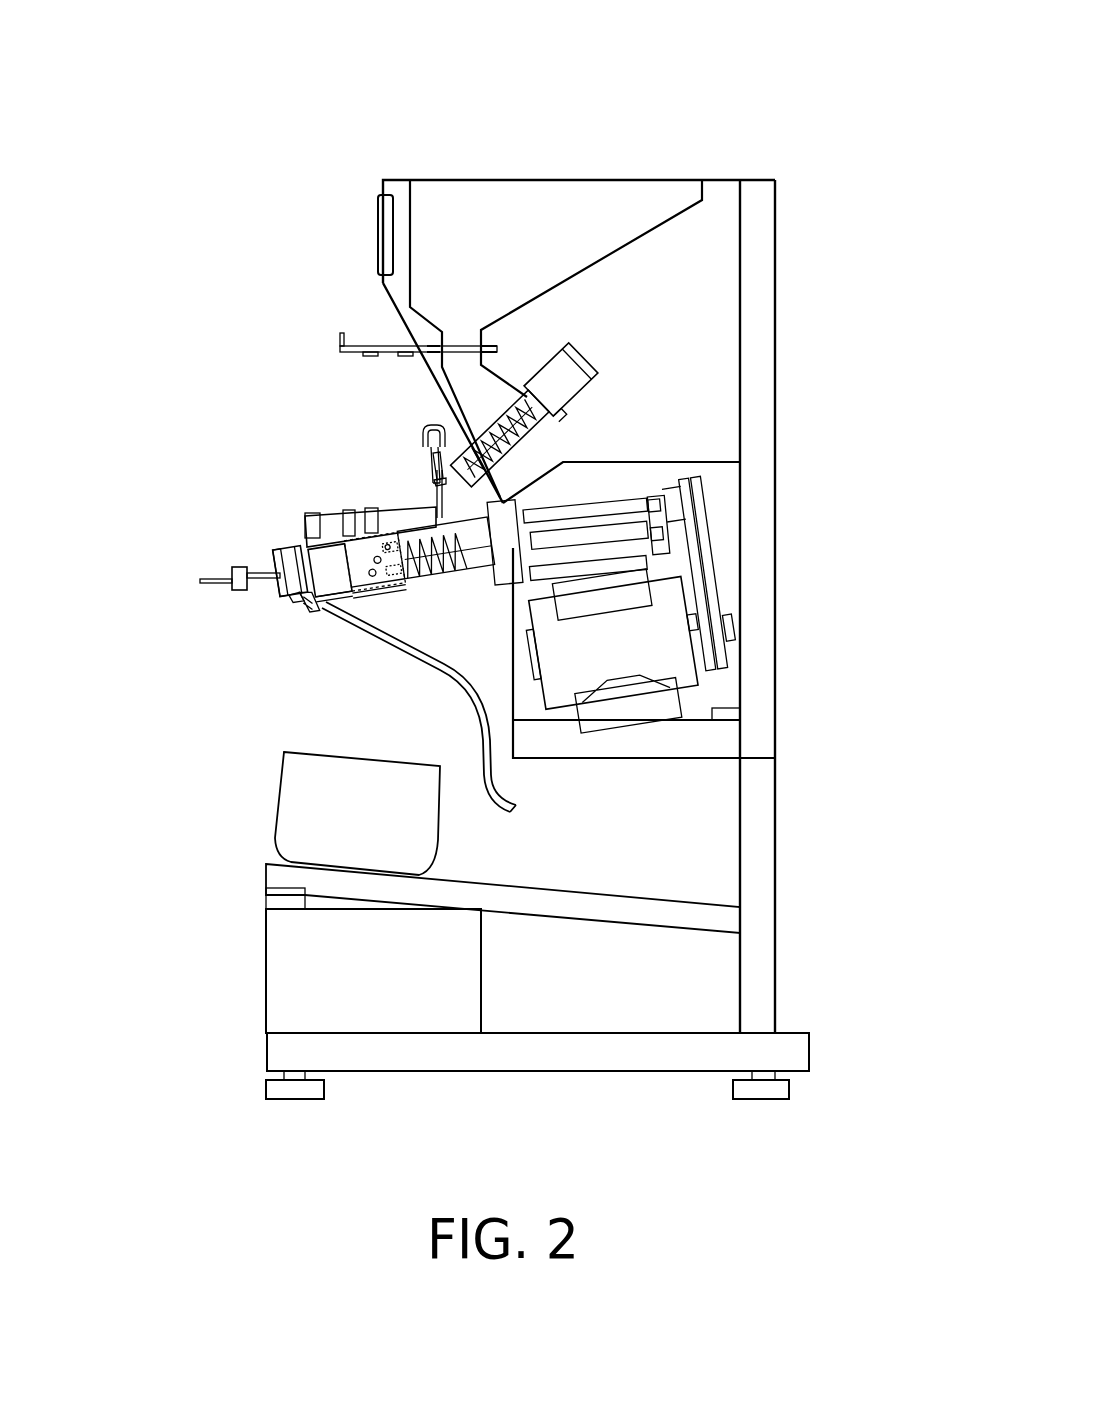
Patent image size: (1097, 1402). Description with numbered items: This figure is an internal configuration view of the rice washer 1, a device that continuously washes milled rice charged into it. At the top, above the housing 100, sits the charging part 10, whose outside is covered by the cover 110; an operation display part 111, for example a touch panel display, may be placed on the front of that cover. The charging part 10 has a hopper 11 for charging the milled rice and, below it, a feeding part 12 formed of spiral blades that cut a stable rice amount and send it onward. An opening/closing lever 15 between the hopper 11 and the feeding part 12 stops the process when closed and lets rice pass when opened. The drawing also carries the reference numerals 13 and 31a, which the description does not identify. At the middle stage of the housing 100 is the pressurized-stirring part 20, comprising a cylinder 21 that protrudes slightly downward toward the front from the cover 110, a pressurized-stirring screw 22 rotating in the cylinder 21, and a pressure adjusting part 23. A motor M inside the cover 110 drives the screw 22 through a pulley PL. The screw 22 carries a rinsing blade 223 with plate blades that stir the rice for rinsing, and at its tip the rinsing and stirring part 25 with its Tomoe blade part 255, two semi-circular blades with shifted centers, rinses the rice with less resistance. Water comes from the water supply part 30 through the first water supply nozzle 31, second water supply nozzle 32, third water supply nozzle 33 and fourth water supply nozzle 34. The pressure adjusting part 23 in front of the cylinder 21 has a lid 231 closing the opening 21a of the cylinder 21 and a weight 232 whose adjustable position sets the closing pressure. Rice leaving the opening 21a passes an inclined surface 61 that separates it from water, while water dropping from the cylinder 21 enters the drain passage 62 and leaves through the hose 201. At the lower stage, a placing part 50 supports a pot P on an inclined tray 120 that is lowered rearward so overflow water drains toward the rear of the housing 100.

The rice washer 1 is at (723, 100).
The charging part 10 is at (427, 180).
The hopper 11 is at (548, 200).
The operation display part 111 is at (383, 222).
The cover 110 is at (716, 288).
The opening/closing lever 15 is at (383, 345).
The support bracket 13 is at (463, 428).
The feeding part 12 is at (517, 440).
The water supply part 30 is at (203, 478).
The first water supply nozzle 31 is at (447, 452).
The heater end portion 31a is at (440, 480).
The second water supply nozzle 32 is at (371, 512).
The third water supply nozzle 33 is at (350, 514).
The fourth water supply nozzle 34 is at (312, 521).
The rinsing and stirring part 25 is at (300, 547).
The pressurized-stirring part 20 is at (268, 548).
The weight 232 is at (233, 572).
The pressure adjusting part 23 is at (237, 592).
The lid 231 is at (300, 603).
The inclined surface 61 is at (313, 620).
The opening 21a is at (307, 613).
The Tomoe blade part 255 is at (330, 613).
The cylinder 21 is at (373, 607).
The rinsing blade 223 is at (357, 592).
The pressurized-stirring screw 22 is at (410, 592).
The drain passage 62 is at (392, 637).
The pulley PL is at (710, 600).
The motor M is at (655, 650).
The housing 100 is at (768, 742).
The hose 201 is at (522, 805).
The pot P is at (305, 795).
The tray 120 is at (660, 905).
The placing part 50 is at (285, 985).